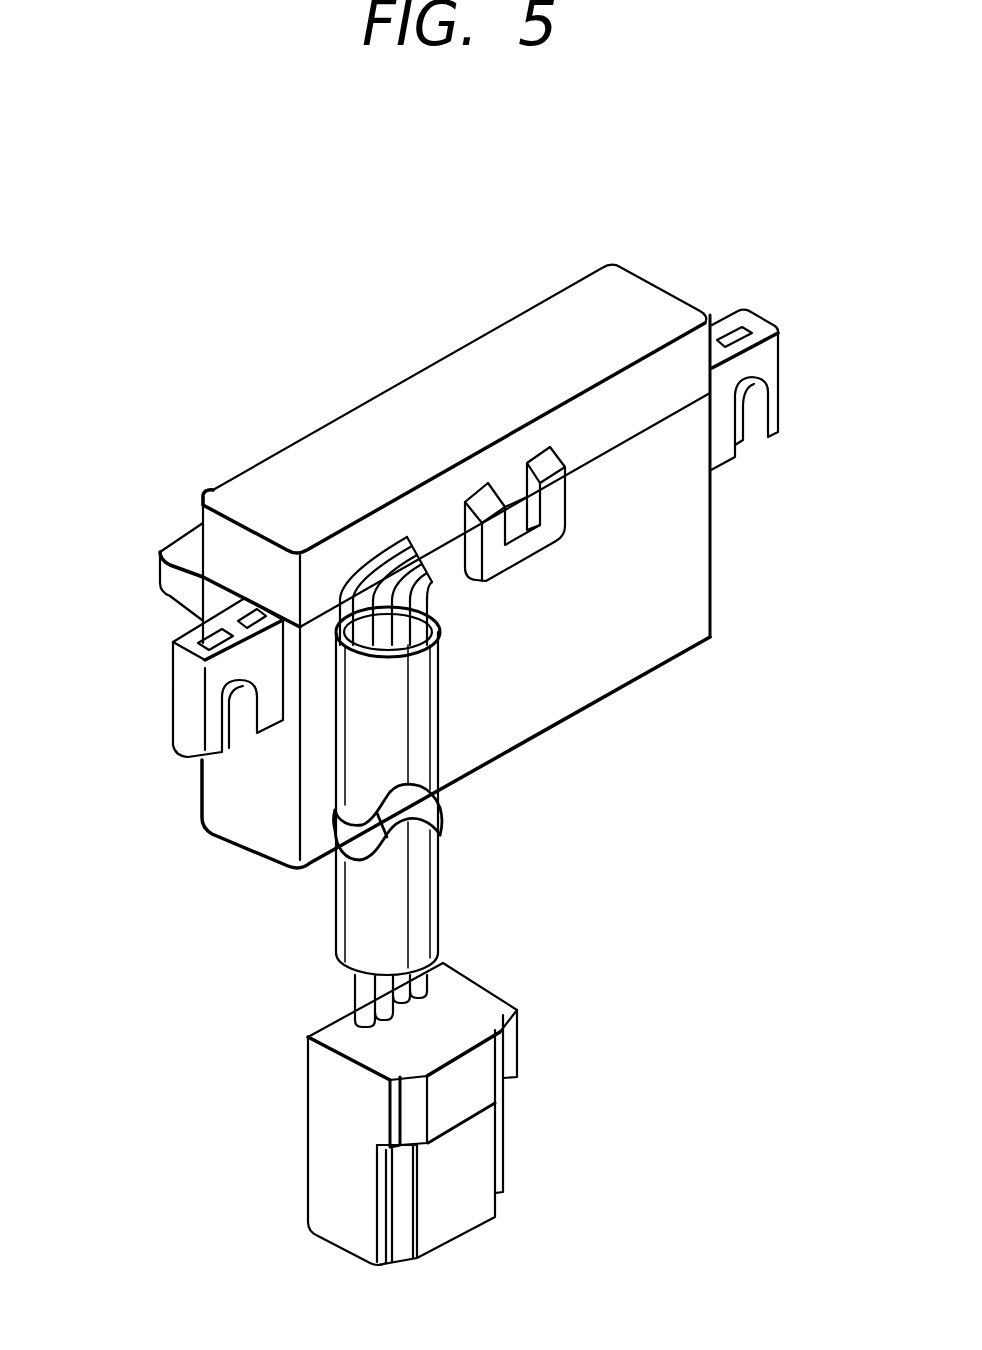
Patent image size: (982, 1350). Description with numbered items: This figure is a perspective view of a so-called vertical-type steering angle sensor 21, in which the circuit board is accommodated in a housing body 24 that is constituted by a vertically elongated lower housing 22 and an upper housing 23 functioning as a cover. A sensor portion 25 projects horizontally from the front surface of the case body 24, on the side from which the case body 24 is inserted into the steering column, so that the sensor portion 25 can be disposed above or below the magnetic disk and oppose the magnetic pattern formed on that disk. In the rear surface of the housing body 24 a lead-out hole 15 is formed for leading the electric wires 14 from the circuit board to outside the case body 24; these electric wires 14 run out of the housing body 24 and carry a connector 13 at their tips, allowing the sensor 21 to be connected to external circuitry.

The connector 13 is at (450, 1210).
The electric wires 14 is at (422, 590).
The lead-out hole 15 is at (397, 552).
The steering angle sensor 21 is at (376, 324).
The lower housing 22 is at (640, 550).
The upper housing 23 is at (640, 407).
The housing body 24 is at (807, 497).
The sensor portion 25 is at (178, 545).